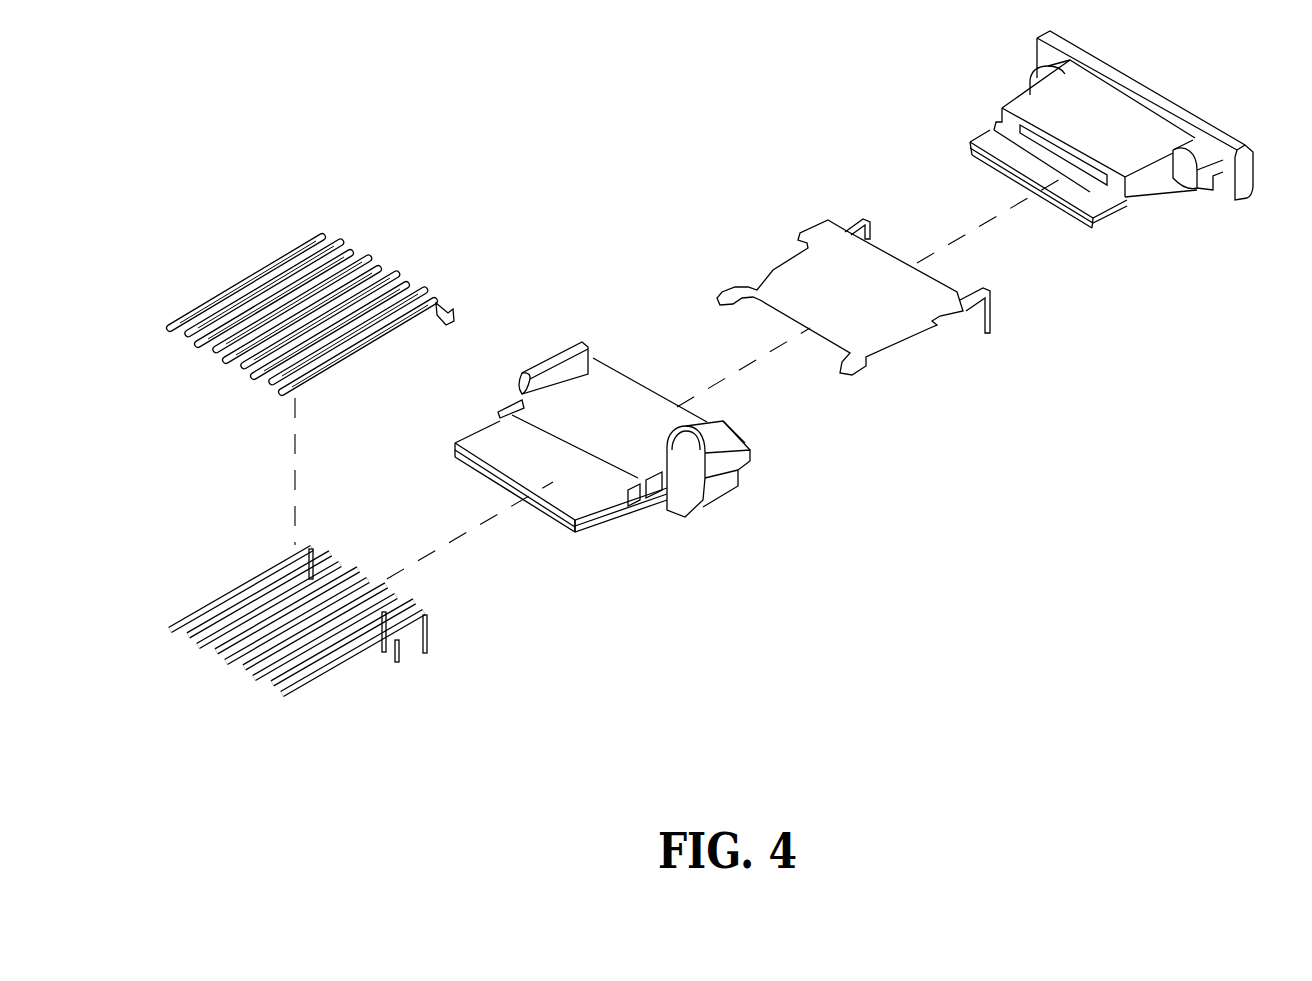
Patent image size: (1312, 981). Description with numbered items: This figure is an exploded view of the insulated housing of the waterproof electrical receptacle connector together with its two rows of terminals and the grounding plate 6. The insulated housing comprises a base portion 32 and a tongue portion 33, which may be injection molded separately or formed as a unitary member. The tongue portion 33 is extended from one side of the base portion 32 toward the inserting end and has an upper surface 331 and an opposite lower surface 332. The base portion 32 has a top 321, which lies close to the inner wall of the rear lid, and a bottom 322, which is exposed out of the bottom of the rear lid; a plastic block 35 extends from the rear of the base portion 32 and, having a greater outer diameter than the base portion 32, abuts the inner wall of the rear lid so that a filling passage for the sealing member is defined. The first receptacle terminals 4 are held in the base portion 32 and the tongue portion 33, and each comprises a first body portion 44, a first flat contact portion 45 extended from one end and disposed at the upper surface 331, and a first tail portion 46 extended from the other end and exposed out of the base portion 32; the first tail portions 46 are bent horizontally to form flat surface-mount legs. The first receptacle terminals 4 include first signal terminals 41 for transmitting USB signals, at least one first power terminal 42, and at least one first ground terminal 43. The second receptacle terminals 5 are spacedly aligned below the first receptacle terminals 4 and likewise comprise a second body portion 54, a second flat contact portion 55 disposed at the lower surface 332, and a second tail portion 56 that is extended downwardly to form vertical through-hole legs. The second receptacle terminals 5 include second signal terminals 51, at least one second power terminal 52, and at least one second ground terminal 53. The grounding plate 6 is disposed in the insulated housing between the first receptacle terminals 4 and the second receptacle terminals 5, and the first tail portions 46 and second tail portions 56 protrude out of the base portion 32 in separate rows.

The first receptacle terminals 4 is at (172, 251).
The first signal terminals 41 is at (166, 333).
The first power terminal 42 is at (196, 348).
The first ground terminal 43 is at (280, 262).
The first body portion 44 is at (368, 353).
The first flat contact portion 45 is at (283, 396).
The first tail portion 46 is at (456, 314).
The second receptacle terminals 5 is at (166, 604).
The second signal terminals 51 is at (168, 633).
The second power terminal 52 is at (194, 645).
The second ground terminal 53 is at (252, 582).
The second body portion 54 is at (360, 661).
The second flat contact portion 55 is at (283, 699).
The second tail portion 56 is at (430, 641).
The grounding plate 6 is at (905, 313).
The base portion 32 is at (700, 502).
The bottom of the base portion 322 is at (714, 487).
The tongue portion 33 is at (585, 532).
The upper surface 331 is at (553, 484).
The lower surface 332 is at (560, 523).
The top of the base portion 321 is at (1060, 110).
The plastic block 35 is at (1208, 110).